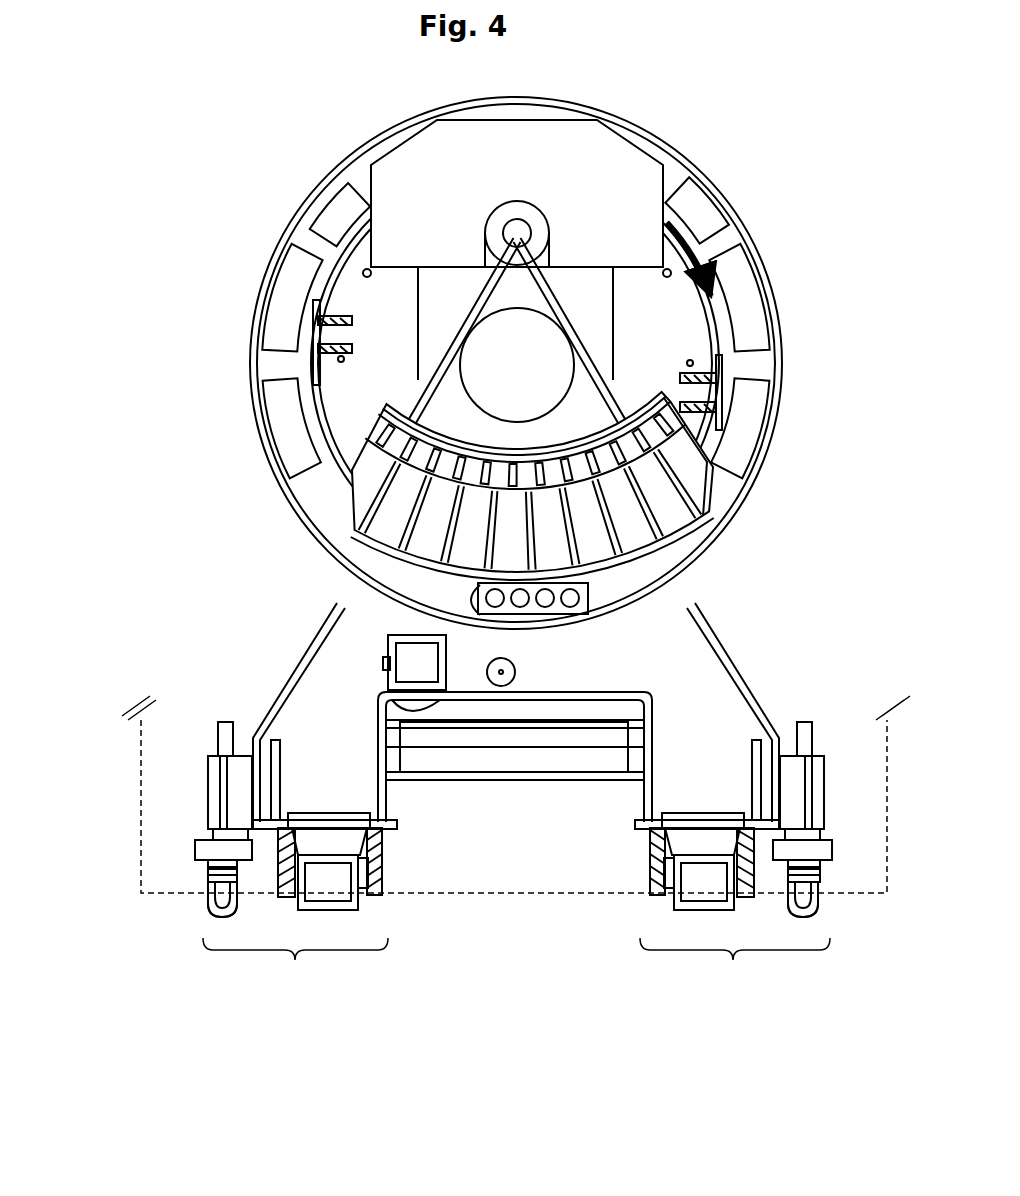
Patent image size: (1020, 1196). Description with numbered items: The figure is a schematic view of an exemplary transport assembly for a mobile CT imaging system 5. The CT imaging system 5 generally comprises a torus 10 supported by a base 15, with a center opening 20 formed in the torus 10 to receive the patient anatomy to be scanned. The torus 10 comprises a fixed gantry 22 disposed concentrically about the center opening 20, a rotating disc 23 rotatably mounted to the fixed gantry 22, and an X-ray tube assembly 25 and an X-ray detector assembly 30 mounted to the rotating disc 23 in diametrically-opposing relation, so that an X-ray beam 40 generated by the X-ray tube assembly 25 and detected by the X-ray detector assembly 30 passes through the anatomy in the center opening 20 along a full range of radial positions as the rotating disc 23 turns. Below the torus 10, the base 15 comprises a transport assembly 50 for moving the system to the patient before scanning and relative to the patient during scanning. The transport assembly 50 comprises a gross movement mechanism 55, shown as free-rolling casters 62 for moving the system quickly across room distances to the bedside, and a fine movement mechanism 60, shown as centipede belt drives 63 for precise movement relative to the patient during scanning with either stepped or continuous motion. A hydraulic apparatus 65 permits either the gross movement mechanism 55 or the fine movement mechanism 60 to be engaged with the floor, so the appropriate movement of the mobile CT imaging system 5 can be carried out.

The CT imaging system 5 is at (236, 190).
The torus 10 is at (340, 166).
The base 15 is at (308, 633).
The center opening 20 is at (692, 377).
The fixed gantry 22 is at (318, 493).
The rotating disc 23 is at (330, 386).
The X-ray tube assembly 25 is at (445, 275).
The X-ray detector assembly 30 is at (372, 421).
The X-ray beam 40 is at (588, 324).
The transport assembly 50 is at (516, 962).
The gross movement mechanism 55 is at (205, 905).
The fine movement mechanism 60 is at (382, 914).
The free-rolling casters 62 is at (222, 914).
The centipede belt drives 63 is at (330, 910).
The hydraulic apparatus 65 is at (204, 790).